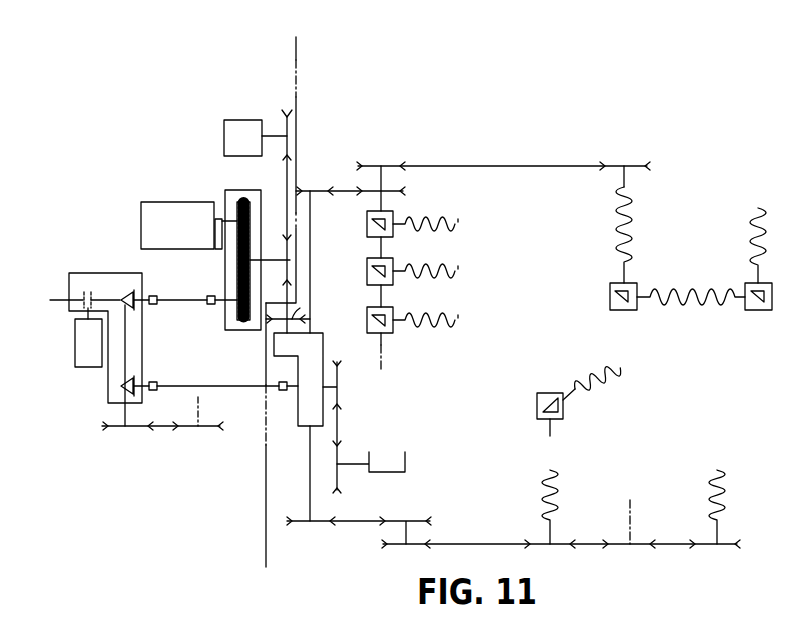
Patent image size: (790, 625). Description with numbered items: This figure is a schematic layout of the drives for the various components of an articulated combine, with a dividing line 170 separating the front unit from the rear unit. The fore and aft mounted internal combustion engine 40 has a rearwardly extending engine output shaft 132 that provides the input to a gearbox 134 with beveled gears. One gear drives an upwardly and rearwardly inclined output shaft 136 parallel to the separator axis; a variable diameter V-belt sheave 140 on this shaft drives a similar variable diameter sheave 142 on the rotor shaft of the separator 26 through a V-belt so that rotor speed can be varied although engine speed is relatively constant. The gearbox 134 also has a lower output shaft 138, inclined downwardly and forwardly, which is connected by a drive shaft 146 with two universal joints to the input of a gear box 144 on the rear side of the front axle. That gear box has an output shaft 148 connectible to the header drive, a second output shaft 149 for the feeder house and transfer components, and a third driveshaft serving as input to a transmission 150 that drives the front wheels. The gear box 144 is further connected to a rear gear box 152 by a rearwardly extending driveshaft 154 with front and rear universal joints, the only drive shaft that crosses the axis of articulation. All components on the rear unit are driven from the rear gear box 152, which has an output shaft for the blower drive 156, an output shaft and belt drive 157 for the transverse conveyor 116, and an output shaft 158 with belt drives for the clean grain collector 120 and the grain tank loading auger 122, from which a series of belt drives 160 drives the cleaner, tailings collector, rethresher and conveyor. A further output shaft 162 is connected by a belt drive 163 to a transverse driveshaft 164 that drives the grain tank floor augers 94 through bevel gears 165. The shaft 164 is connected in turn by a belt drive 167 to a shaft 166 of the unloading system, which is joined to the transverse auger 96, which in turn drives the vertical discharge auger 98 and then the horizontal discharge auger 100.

The separator 26 is at (254, 119).
The internal combustion engine 40 is at (170, 202).
The fore and aft auger 94 is at (459, 326).
The transverse auger 96 is at (633, 235).
The vertical discharge auger 98 is at (712, 304).
The horizontal discharge auger 100 is at (750, 240).
The transverse belt-type conveyor 116 is at (405, 458).
The clean grain collector 120 is at (560, 487).
The grain tank loading auger 122 is at (603, 385).
The engine output shaft 132 is at (219, 218).
The gearbox 134 is at (225, 264).
The output shaft 136 is at (290, 260).
The lower output shaft 138 is at (215, 304).
The variable diameter V-belt sheave 140 is at (296, 273).
The variable diameter sheave 142 is at (291, 121).
The gear box 144 is at (142, 355).
The drive shaft 146 is at (193, 303).
The output shaft 148 is at (56, 299).
The second output shaft 149 is at (123, 413).
The transmission 150 is at (98, 367).
The rear gear box 152 is at (298, 420).
The driveshaft 154 is at (215, 388).
The blower drive 156 is at (310, 304).
The output shaft and belt drive 157 is at (337, 393).
The output shaft 158 is at (310, 502).
The belt drives 160 is at (683, 544).
The output shaft 162 is at (310, 224).
The belt drive 163 is at (344, 191).
The transverse driveshaft 164 is at (381, 178).
The bevel gears 165 is at (381, 335).
The shaft 166 is at (626, 181).
The belt drive 167 is at (545, 166).
The dividing line 170 is at (266, 548).